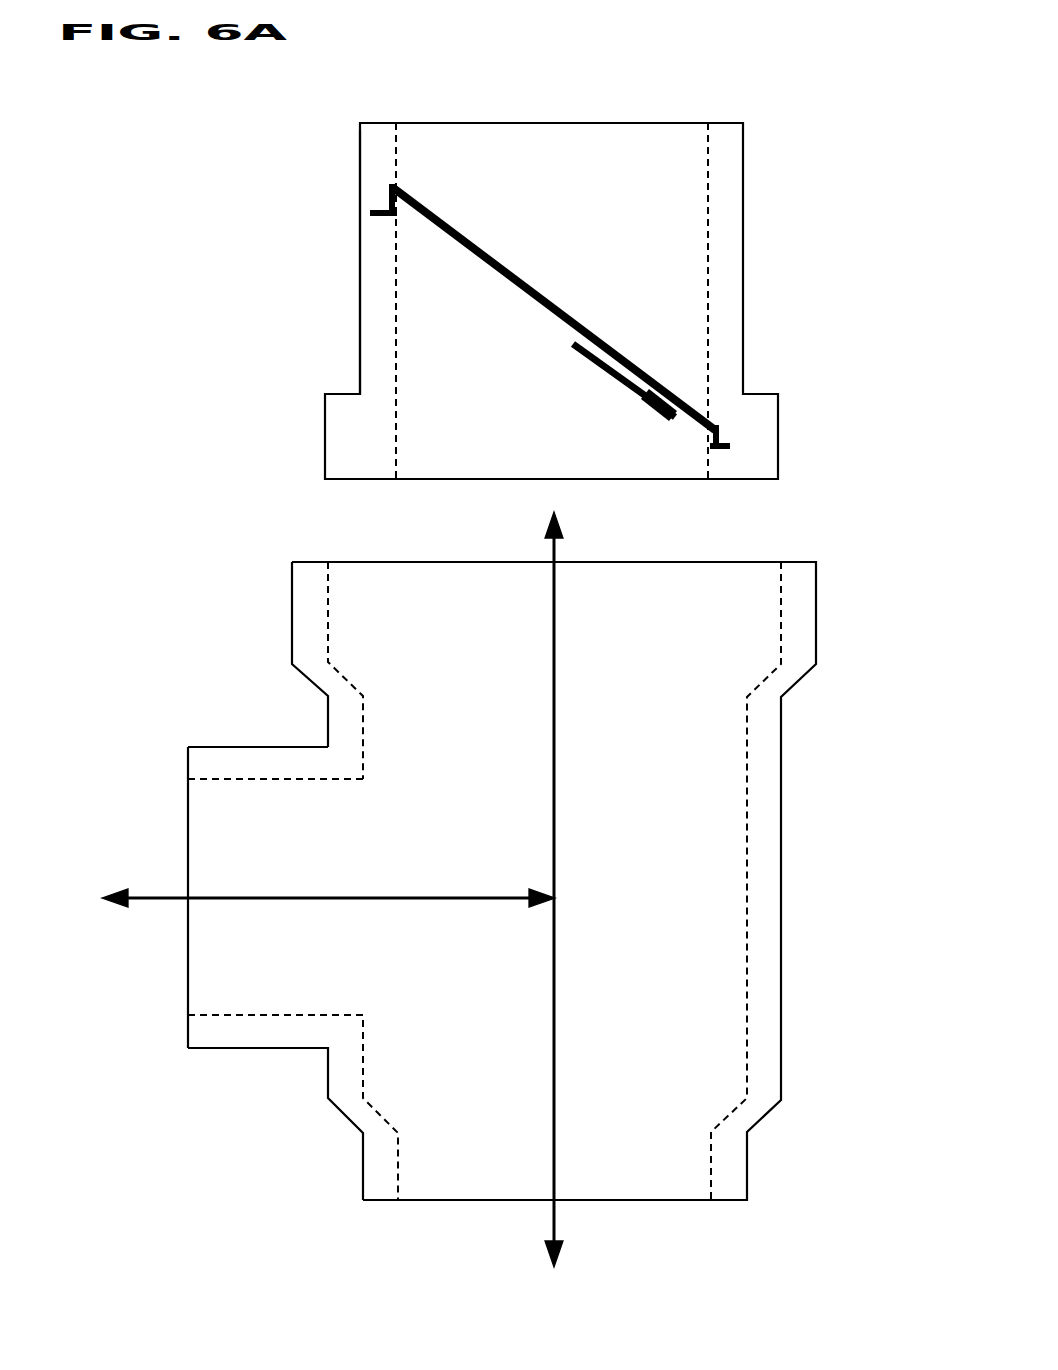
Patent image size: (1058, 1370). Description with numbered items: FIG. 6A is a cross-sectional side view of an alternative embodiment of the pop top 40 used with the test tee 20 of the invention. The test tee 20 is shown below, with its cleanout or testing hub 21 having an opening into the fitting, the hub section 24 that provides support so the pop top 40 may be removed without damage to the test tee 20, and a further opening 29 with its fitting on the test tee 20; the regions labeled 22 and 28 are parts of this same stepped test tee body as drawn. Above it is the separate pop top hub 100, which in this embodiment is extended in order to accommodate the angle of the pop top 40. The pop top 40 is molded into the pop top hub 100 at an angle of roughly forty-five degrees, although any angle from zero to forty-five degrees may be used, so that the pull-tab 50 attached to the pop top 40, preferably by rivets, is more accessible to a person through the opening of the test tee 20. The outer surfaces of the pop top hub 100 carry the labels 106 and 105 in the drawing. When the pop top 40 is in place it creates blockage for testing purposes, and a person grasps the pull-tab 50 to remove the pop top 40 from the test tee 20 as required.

The upper housing top surface 106 is at (535, 123).
The upper housing inner wall 105 is at (380, 343).
The pop top hub 100 is at (292, 362).
The pop top 40 is at (553, 313).
The pull-tab 50 is at (640, 400).
The test tee 20 is at (782, 870).
The hub section 24 is at (292, 628).
The cleanout or testing hub 21 is at (258, 746).
The side wall 22 is at (258, 862).
The lower flange 28 is at (362, 1172).
The opening 29 is at (468, 1167).